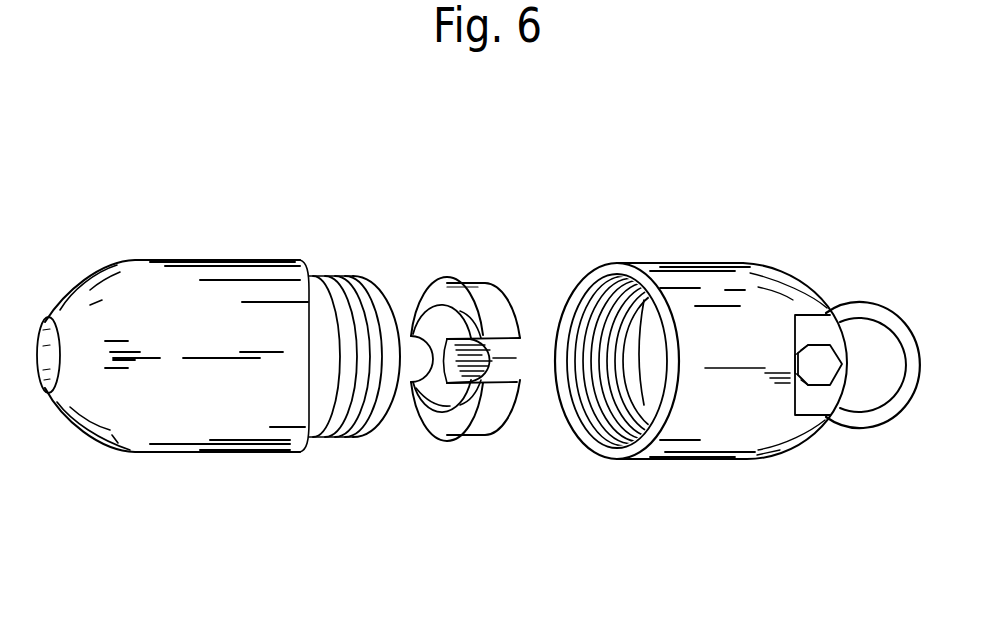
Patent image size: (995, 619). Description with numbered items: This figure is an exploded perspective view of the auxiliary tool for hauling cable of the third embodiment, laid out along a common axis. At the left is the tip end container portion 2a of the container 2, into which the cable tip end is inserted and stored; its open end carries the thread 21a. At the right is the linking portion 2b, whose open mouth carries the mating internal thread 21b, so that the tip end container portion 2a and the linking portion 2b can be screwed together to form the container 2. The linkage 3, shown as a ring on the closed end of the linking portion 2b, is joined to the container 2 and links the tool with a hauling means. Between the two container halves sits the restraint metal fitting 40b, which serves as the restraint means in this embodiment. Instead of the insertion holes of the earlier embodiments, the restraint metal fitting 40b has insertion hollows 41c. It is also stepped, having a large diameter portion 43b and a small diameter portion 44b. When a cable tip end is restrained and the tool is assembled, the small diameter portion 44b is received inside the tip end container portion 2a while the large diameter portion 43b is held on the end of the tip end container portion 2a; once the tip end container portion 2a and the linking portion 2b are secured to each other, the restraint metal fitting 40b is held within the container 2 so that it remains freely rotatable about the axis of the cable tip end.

The container 2 is at (558, 192).
The tip end container portion 2a is at (300, 267).
The linking portion 2b is at (600, 278).
The thread 21a is at (337, 437).
The thread 21b is at (607, 440).
The restraint metal fitting 40b is at (445, 293).
The large diameter portion 43b is at (503, 313).
The small diameter portion 44b is at (433, 392).
The insertion hollow 41c is at (516, 358).
The linkage 3 is at (897, 320).